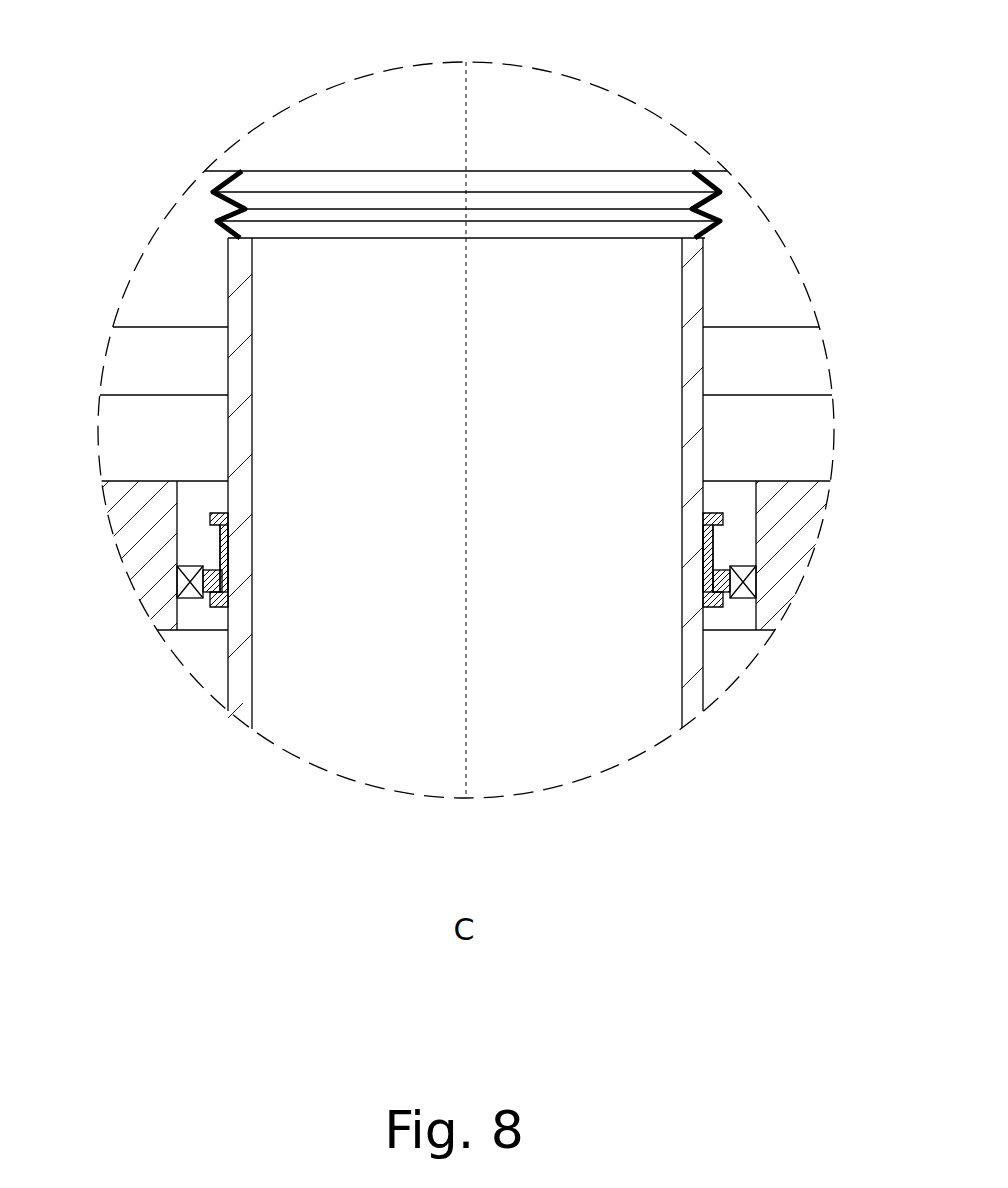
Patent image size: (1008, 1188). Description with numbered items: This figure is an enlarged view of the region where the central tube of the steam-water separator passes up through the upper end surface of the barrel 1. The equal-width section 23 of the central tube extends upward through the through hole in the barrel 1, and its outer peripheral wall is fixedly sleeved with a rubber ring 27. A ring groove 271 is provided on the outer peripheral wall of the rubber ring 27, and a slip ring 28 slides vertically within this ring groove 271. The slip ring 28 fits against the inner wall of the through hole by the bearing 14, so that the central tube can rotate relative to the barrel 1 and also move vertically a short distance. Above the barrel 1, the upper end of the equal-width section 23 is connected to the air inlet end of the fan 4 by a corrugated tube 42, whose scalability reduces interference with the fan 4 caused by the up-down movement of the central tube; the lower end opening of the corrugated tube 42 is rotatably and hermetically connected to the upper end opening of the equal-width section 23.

The fan 4 is at (367, 122).
The corrugated tube 42 is at (228, 194).
The equal-width section 23 is at (240, 443).
The barrel 1 is at (140, 548).
The bearing 14 is at (177, 580).
The slip ring 28 is at (757, 576).
The rubber ring 27 is at (713, 605).
The ring groove 271 is at (720, 548).